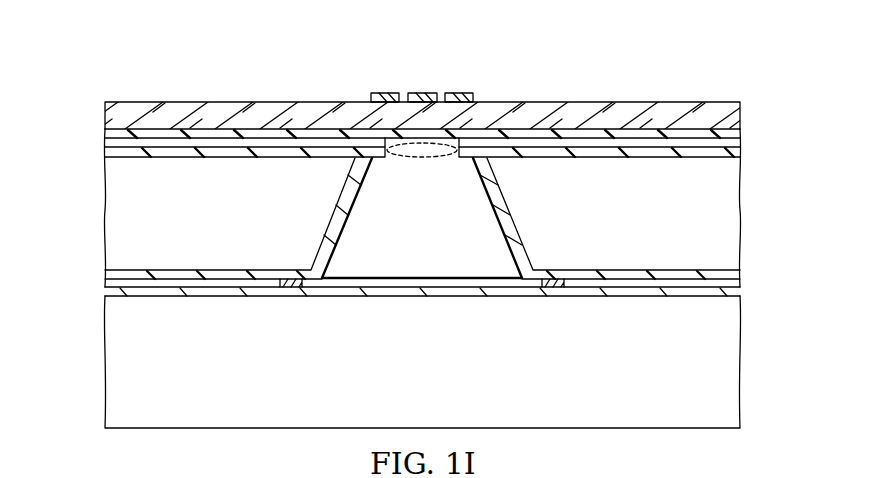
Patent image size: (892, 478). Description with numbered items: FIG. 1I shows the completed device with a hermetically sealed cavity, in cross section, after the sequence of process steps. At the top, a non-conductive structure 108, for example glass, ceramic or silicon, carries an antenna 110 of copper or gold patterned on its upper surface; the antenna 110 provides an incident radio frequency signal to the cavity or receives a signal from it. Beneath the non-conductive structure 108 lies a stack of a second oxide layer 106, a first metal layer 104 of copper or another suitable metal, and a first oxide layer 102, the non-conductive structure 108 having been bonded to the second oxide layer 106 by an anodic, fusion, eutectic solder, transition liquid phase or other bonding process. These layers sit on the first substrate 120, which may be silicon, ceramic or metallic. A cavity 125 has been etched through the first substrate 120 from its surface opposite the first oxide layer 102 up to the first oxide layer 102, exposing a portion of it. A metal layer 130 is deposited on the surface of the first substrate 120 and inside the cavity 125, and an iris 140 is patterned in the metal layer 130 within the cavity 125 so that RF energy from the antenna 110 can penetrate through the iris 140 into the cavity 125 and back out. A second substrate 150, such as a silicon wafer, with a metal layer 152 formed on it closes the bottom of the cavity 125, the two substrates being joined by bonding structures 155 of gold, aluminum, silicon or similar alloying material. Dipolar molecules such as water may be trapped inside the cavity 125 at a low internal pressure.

The first oxide layer 102 is at (232, 148).
The first metal layer 104 is at (105, 148).
The second oxide layer 106 is at (740, 133).
The non-conductive structure 108 is at (105, 116).
The antenna 110 is at (458, 86).
The first substrate 120 is at (105, 215).
The cavity 125 is at (403, 191).
The metal layer 130 is at (105, 272).
The iris 140 is at (436, 167).
The second substrate 150 is at (442, 373).
The metal layer 152 is at (740, 292).
The bonding structures 155 is at (290, 288).